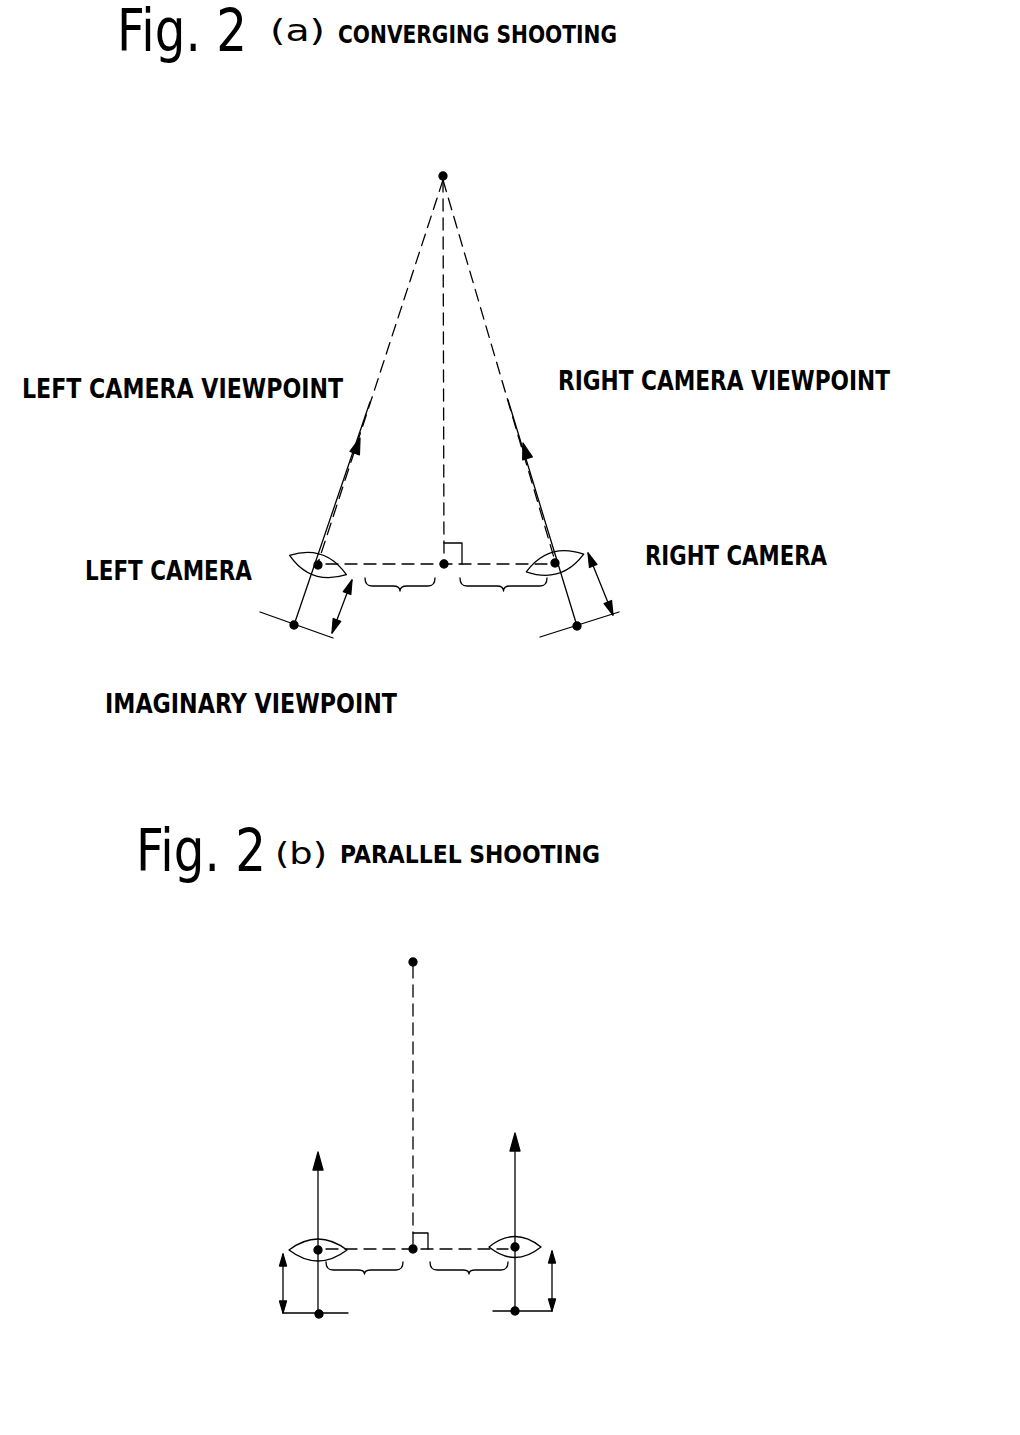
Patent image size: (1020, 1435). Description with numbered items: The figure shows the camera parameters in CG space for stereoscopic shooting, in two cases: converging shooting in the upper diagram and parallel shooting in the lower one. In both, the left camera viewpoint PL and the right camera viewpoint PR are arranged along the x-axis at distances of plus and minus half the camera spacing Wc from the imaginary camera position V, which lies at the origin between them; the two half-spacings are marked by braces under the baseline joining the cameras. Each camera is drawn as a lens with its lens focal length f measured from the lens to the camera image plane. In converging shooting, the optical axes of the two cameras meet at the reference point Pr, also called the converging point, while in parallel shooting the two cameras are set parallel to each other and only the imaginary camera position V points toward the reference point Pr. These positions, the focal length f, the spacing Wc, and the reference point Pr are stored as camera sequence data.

In FIG. 2A, the reference point Pr is at (561, 144).
In FIG. 2B, the reference point Pr is at (416, 935).
In FIG. 2A, the left camera viewpoint PL is at (305, 550).
In FIG. 2B, the left camera viewpoint PL is at (302, 1235).
In FIG. 2A, the right camera viewpoint PR is at (573, 547).
In FIG. 2B, the right camera viewpoint PR is at (529, 1224).
In FIG. 2A, the imaginary camera position V is at (444, 567).
In FIG. 2B, the imaginary camera position V is at (418, 1268).
In FIG. 2A, the camera focal length f is at (480, 593).
In FIG. 2B, the camera focal length f is at (413, 1282).
In FIG. 2A, the camera spacing Wc is at (427, 628).
In FIG. 2B, the camera spacing Wc is at (390, 1308).